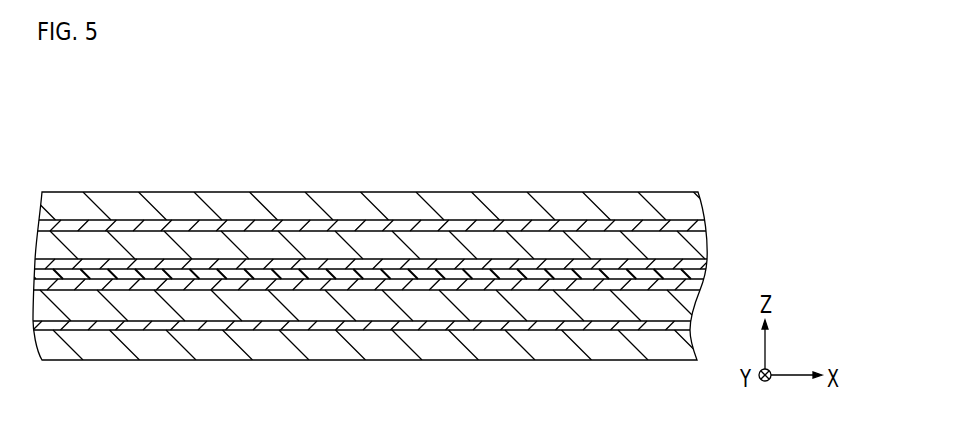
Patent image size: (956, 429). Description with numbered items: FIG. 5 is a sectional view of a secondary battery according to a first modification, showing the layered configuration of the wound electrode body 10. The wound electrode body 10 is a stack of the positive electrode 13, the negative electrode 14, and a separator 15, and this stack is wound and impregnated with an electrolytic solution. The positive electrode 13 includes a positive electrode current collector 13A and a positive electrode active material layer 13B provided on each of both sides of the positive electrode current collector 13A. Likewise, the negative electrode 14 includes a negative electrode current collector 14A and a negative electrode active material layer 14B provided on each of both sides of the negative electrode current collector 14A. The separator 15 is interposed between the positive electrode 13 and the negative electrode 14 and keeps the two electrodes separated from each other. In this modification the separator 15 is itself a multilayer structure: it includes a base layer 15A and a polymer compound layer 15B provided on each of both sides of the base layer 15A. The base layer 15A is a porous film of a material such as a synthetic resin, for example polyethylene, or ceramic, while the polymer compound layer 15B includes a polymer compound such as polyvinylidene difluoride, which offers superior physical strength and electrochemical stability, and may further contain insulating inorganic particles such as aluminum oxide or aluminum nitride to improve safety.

The wound electrode body 10 is at (688, 134).
The positive electrode 13 is at (250, 105).
The positive electrode current collector 13A is at (139, 226).
The positive electrode active material layer 13B is at (207, 247).
The negative electrode 14 is at (447, 105).
The negative electrode current collector 14A is at (339, 324).
The negative electrode active material layer 14B is at (390, 340).
The separator 15 is at (640, 105).
The base layer 15A is at (533, 277).
The polymer compound layer 15B is at (592, 285).